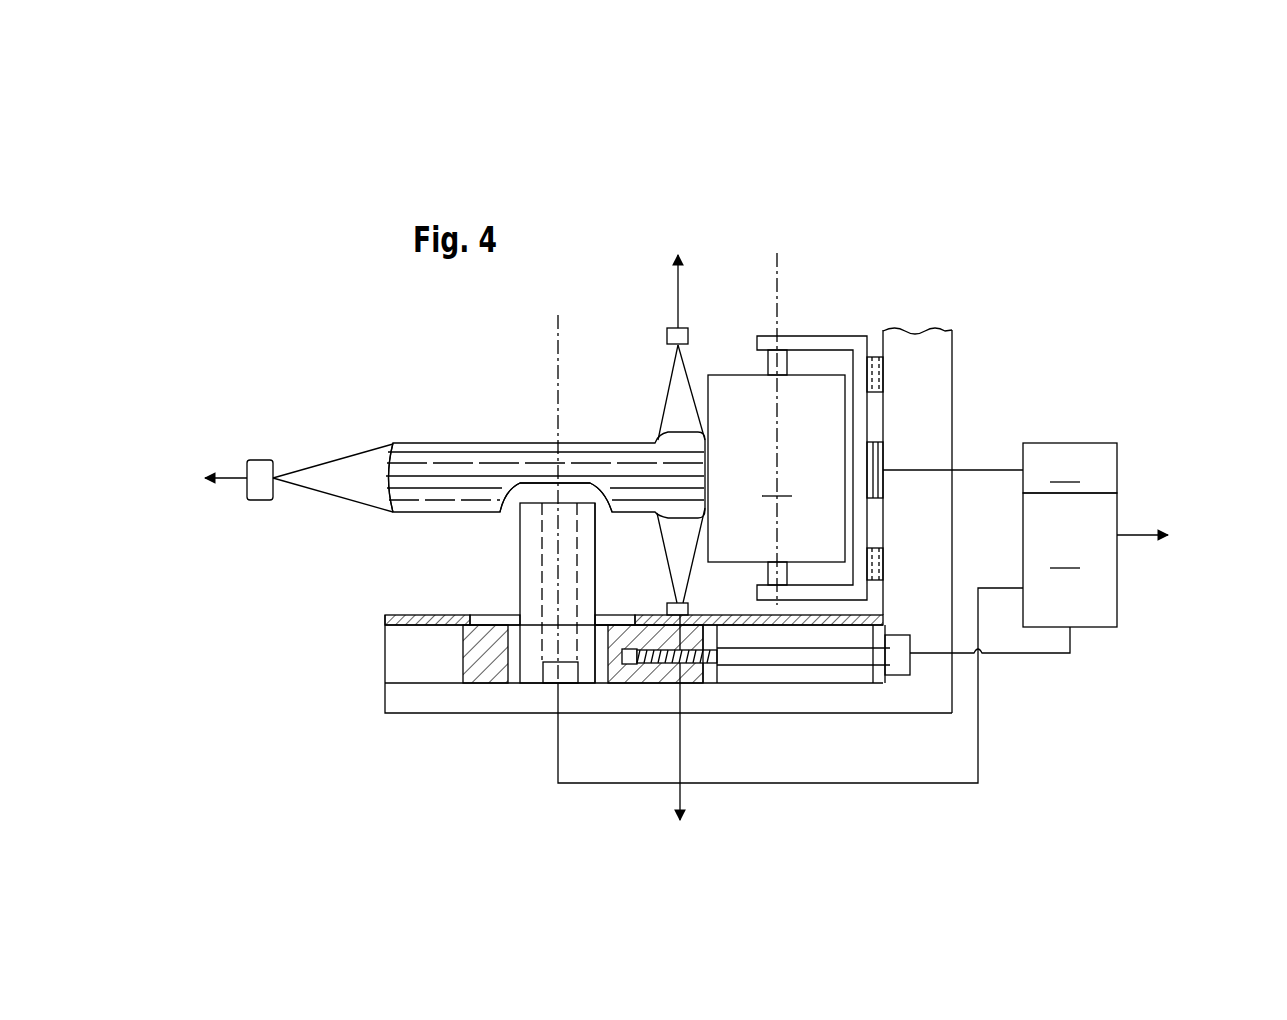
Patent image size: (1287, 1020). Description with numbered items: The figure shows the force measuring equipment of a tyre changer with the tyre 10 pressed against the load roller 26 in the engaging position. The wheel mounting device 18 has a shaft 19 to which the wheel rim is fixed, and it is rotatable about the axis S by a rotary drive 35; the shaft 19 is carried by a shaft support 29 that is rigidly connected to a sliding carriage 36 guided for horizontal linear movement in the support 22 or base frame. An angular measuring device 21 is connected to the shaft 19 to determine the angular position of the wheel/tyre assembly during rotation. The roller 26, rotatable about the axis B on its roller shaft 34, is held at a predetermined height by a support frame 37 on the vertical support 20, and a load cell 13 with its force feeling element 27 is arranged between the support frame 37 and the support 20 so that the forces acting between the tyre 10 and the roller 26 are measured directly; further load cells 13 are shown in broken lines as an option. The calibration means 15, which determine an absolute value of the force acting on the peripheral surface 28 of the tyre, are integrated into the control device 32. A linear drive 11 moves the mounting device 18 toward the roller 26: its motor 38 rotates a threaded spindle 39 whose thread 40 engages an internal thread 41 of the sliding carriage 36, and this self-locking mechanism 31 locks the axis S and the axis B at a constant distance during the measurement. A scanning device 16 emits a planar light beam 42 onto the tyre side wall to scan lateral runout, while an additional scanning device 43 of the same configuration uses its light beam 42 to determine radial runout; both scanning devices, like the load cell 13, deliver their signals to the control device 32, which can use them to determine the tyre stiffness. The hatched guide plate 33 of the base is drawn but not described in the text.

The tyre 10 is at (430, 445).
The linear drive 11 is at (765, 690).
The load cell 13 is at (873, 357).
The calibration means 15 is at (1070, 468).
The scanning device 16 is at (667, 336).
The wheel mounting device 18 is at (515, 546).
The shaft 19 is at (555, 495).
The support 20 is at (950, 340).
The angular measuring device 21 is at (553, 685).
The support 22 is at (395, 700).
The load roller 26 is at (776, 468).
The force feeling element 27 is at (877, 460).
The peripheral surface 28 is at (385, 495).
The shaft support 29 is at (590, 548).
The self-locking mechanical means 31 is at (638, 685).
The control device 32 is at (916, 638).
The hatched guide plate 33 is at (495, 622).
The roller shaft 34 is at (768, 365).
The rotary drive 35 is at (596, 685).
The sliding carriage 36 is at (485, 685).
The support frame 37 is at (822, 340).
The motor 38 is at (900, 680).
The threaded spindle 39 is at (815, 660).
The thread 40 is at (705, 685).
The internal thread 41 is at (665, 685).
The planar light beam 42 is at (365, 445).
The scanning device 43 is at (258, 465).
The axis S is at (555, 345).
The axis B is at (780, 278).